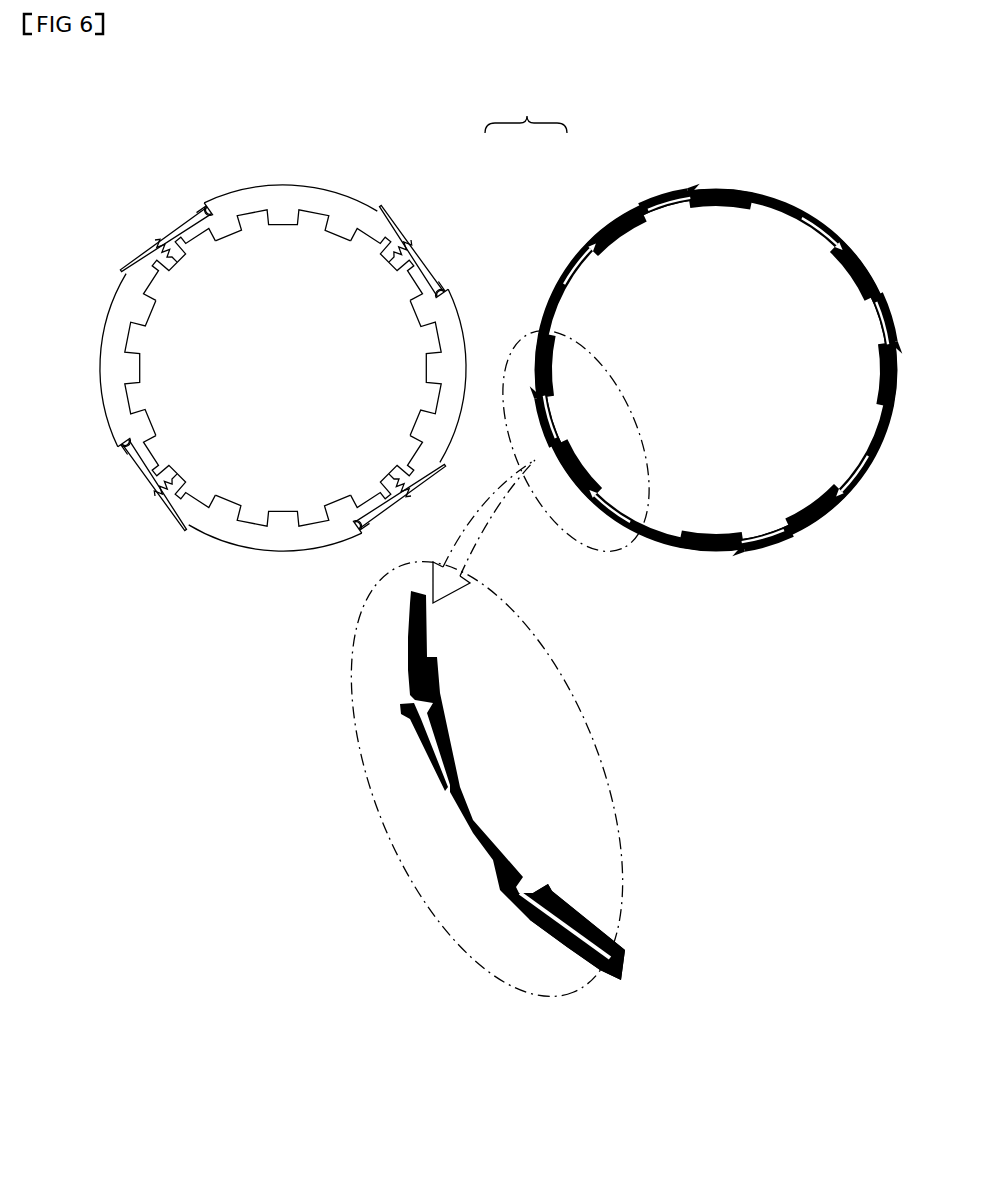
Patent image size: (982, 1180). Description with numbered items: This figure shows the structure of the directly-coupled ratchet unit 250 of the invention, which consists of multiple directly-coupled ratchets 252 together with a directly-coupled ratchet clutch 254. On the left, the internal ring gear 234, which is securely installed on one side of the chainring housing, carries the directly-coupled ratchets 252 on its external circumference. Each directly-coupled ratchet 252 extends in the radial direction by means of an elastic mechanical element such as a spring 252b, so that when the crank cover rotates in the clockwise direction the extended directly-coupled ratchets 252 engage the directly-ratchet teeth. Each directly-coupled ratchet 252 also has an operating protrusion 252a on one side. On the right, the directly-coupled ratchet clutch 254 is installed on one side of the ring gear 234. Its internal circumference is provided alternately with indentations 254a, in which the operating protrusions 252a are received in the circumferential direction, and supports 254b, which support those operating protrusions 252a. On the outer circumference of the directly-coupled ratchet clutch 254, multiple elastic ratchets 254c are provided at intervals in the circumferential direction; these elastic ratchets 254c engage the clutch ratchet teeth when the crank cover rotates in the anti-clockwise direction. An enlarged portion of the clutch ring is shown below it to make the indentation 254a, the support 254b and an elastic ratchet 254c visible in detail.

The internal ring gear 234 is at (286, 200).
The directly-coupled ratchet unit 250 is at (526, 106).
The directly-coupled ratchet 252 is at (413, 255).
The operating protrusion 252a is at (170, 250).
The spring 252b is at (186, 272).
The directly-coupled ratchet clutch 254 is at (687, 388).
The indentation 254a is at (438, 644).
The support 254b is at (548, 888).
The elastic ratchet 254c is at (740, 547).